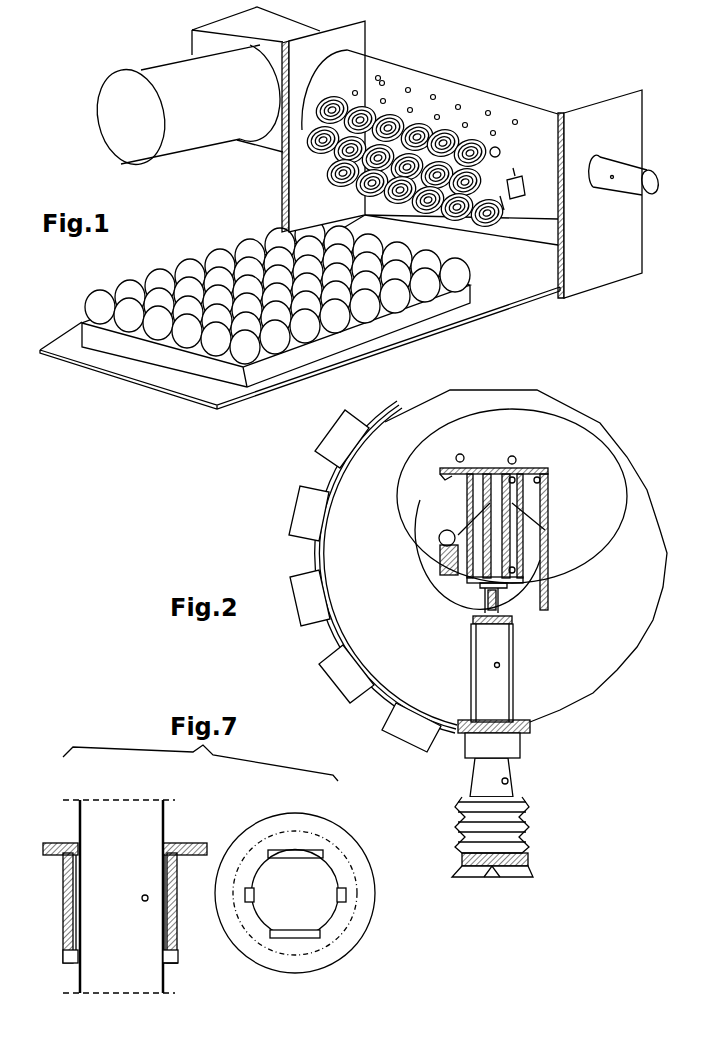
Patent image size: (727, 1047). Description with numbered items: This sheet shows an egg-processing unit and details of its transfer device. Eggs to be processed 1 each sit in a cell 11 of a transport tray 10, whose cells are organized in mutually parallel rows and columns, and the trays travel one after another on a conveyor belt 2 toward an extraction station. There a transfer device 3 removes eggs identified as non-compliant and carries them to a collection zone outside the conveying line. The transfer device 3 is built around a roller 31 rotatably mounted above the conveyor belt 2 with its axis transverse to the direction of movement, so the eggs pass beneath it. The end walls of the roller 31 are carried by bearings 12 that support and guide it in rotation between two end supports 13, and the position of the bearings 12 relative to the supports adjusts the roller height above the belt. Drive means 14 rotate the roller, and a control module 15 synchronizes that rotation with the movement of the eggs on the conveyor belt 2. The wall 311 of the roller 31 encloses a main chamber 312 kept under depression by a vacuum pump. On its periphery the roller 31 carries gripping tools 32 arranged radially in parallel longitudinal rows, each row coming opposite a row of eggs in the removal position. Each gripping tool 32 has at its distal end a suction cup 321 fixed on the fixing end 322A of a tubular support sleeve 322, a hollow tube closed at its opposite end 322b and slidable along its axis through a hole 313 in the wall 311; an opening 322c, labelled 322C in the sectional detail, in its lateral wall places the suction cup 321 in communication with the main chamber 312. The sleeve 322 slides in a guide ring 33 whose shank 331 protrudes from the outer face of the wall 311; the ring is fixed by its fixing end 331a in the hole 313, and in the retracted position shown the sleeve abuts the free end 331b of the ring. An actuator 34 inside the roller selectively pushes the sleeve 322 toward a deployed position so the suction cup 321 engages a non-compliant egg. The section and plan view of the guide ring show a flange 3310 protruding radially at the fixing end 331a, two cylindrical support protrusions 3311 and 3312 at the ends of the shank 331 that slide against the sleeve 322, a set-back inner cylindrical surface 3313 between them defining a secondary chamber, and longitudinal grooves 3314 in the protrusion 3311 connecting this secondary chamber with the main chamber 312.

In FIG. 1, the eggs to be processed 1 is at (207, 273).
In FIG. 1, the conveyor belt 2 is at (490, 290).
In FIG. 1, the transfer device 3 is at (547, 90).
In FIG. 2, the transfer device 3 is at (260, 527).
In FIG. 1, the transport tray 10 is at (193, 363).
In FIG. 1, the cell 11 is at (130, 333).
In FIG. 1, the bearings 12 is at (612, 180).
In FIG. 1, the end supports 13 is at (633, 110).
In FIG. 1, the drive means 14 is at (222, 25).
In FIG. 1, the control module 15 is at (153, 63).
In FIG. 1, the roller 31 is at (420, 132).
In FIG. 2, the roller 31 is at (467, 571).
In FIG. 1, the wall 311 is at (392, 80).
In FIG. 2, the wall 311 is at (640, 472).
In FIG. 2, the main chamber 312 is at (377, 620).
In FIG. 1, the hole 313 is at (437, 82).
In FIG. 1, the gripping tools 32 is at (510, 216).
In FIG. 2, the gripping tools 32 is at (516, 837).
In FIG. 1, the suction cup 321 is at (506, 198).
In FIG. 2, the suction cup 321 is at (560, 873).
In FIG. 2, the tubular support sleeve 322 is at (499, 703).
In FIG. 7, the tubular support sleeve 322 is at (106, 888).
In FIG. 2, the fixing end 322A is at (513, 760).
In FIG. 2, the closed end 322b is at (513, 610).
In FIG. 2, the opening 322c is at (510, 665).
In FIG. 7, the opening 322C is at (140, 900).
In FIG. 1, the guide ring 33 is at (512, 176).
In FIG. 2, the guide ring 33 is at (508, 743).
In FIG. 7, the guide ring 33 is at (173, 899).
In FIG. 2, the shank 331 is at (465, 743).
In FIG. 7, the shank 331 is at (173, 899).
In FIG. 2, the fixing end 331a is at (468, 703).
In FIG. 7, the fixing end 331a is at (287, 890).
In FIG. 2, the free end 331b is at (470, 773).
In FIG. 7, the free end 331b is at (167, 963).
In FIG. 7, the flange 3310 is at (183, 843).
In FIG. 7, the cylindrical support protrusion 3311 is at (160, 867).
In FIG. 7, the cylindrical support protrusion 3312 is at (167, 942).
In FIG. 7, the set-back inner cylindrical surface 3313 is at (160, 917).
In FIG. 7, the longitudinal grooves 3314 is at (323, 940).
In FIG. 2, the actuator 34 is at (527, 553).